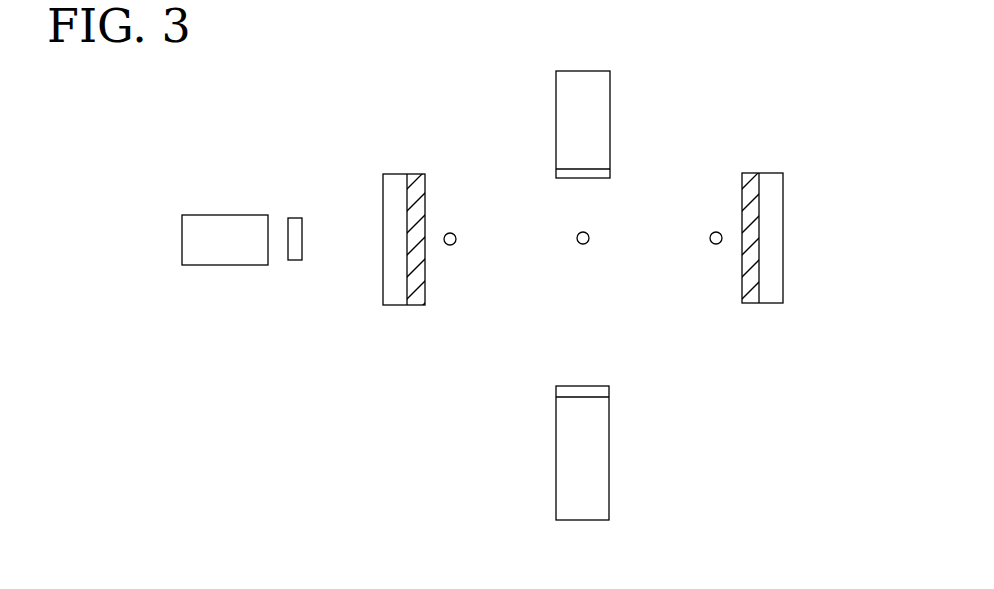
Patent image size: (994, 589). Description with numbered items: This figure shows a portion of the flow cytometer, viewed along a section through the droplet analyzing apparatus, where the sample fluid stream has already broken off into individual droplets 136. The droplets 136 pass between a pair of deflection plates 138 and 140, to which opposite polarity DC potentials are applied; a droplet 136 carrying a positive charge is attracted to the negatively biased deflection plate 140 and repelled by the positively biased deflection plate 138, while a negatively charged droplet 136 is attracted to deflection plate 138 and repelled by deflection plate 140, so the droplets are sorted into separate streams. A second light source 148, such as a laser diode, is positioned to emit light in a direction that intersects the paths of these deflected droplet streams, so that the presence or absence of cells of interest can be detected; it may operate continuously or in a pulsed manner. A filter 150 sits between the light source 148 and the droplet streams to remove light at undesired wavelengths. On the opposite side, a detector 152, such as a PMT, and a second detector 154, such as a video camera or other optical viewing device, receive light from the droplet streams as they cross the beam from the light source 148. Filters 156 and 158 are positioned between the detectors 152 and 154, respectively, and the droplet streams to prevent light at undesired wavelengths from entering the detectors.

The droplets 136 is at (713, 243).
The deflection plate 138 is at (400, 173).
The deflection plate 140 is at (776, 207).
The second light source 148 is at (220, 230).
The filter 150 is at (296, 260).
The detector 152 is at (599, 99).
The second detector 154 is at (597, 453).
The filter 156 is at (608, 175).
The filter 158 is at (555, 387).